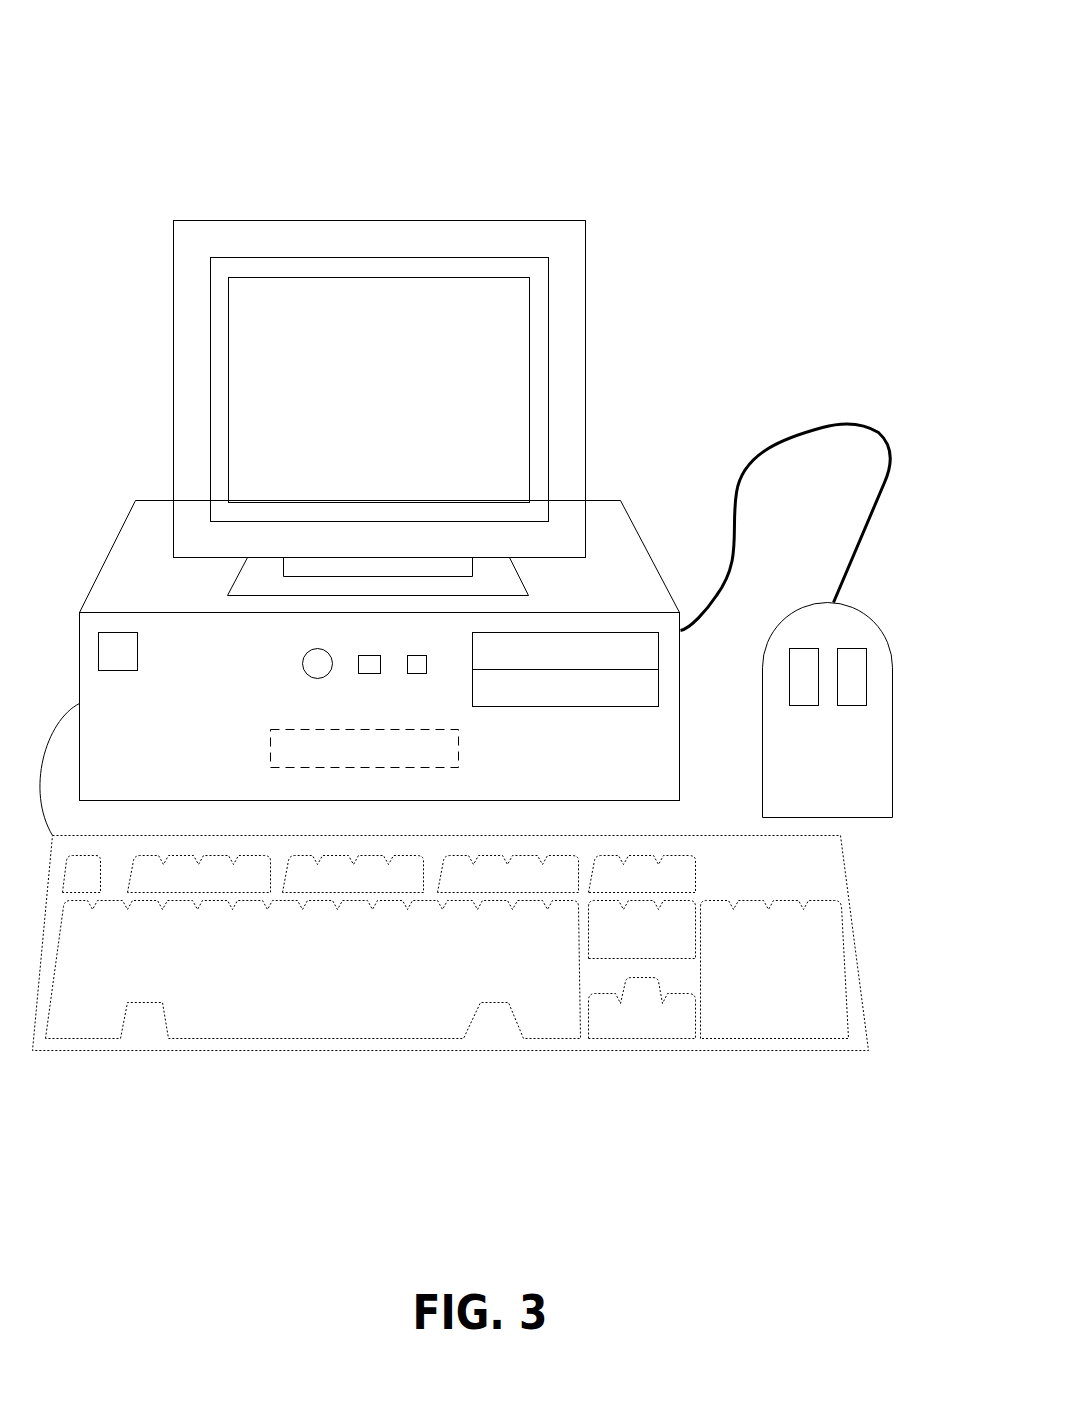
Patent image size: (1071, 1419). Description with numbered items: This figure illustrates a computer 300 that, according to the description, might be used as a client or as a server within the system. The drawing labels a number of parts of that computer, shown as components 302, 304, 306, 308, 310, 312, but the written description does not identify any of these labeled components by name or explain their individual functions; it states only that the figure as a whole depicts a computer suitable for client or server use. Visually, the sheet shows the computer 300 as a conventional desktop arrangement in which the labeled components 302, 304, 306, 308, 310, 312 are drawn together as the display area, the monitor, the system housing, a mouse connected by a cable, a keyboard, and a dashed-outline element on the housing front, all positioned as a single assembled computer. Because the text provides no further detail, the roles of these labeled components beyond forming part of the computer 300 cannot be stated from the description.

The computer system 300 is at (715, 62).
The display screen 302 is at (377, 388).
The monitor 304 is at (585, 390).
The computer housing / system unit 306 is at (680, 703).
The mouse 308 is at (893, 707).
The keyboard 310 is at (788, 1023).
The storage device / memory 312 is at (458, 750).